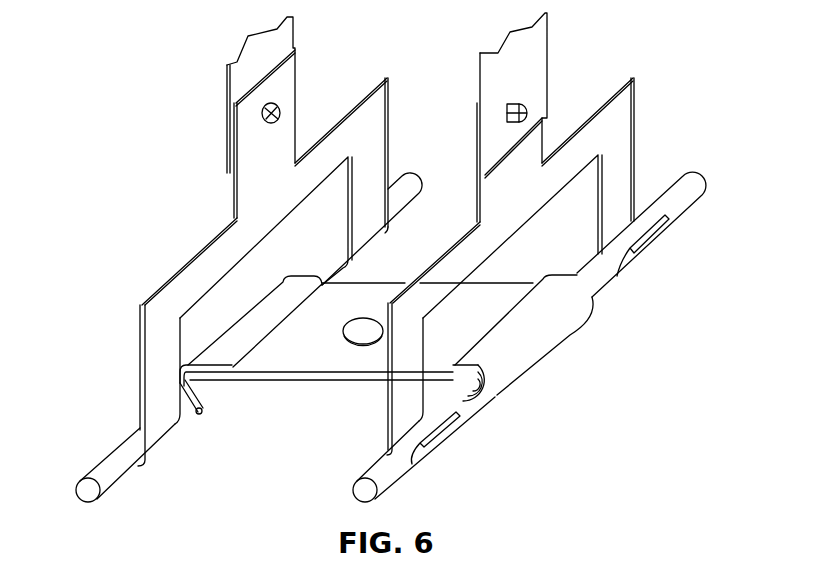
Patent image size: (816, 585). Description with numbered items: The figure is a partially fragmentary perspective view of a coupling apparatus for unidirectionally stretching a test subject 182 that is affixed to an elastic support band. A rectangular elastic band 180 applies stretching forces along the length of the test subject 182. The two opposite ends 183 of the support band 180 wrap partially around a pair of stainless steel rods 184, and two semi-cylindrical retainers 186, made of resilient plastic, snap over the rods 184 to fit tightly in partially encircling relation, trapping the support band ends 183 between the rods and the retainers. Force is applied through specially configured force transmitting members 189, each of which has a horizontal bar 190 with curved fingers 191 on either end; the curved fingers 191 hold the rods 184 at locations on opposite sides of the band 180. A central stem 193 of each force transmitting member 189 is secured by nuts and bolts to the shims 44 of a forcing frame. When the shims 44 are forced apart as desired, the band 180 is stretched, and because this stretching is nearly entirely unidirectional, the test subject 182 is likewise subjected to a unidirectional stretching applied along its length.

The shims 44 is at (242, 78).
The rectangular elastic band 180 is at (328, 368).
The test subject 182 is at (356, 334).
The ends of the support band 183 is at (188, 425).
The stainless steel rods 184 is at (118, 457).
The semi-cylindrical retainers 186 is at (287, 288).
The force transmitting members 189 is at (388, 97).
The horizontal bar 190 is at (353, 122).
The curved fingers 191 is at (380, 153).
The central stem 193 is at (288, 70).